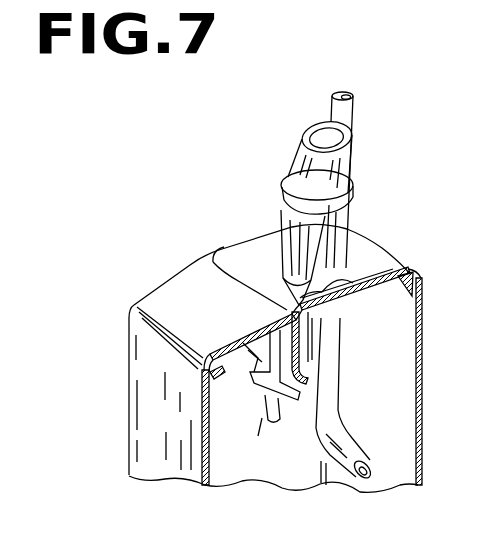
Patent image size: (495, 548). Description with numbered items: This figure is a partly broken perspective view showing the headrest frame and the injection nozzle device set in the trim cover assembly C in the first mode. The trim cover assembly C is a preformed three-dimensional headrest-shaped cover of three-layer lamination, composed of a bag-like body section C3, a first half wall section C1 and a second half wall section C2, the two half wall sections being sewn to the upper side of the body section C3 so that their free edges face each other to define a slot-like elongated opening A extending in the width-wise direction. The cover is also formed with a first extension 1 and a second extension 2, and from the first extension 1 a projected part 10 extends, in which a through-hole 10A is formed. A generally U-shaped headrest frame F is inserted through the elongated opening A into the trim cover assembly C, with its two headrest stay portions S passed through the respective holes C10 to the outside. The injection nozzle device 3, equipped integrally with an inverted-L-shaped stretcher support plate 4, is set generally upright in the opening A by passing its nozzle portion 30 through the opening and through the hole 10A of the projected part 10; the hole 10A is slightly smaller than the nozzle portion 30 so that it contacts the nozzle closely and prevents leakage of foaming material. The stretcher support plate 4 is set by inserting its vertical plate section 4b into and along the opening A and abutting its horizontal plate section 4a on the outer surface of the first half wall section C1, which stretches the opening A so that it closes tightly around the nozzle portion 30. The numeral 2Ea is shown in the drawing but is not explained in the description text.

The trim cover assembly C is at (278, 325).
The first half wall section C1 is at (382, 253).
The second half wall section C2 is at (182, 280).
The bag-like body section C3 is at (147, 388).
The holes C10 is at (348, 228).
The second extension 2 is at (278, 335).
The top wall edge portion 2Ea is at (227, 347).
The stretcher support plate 4 is at (262, 251).
The horizontal plate section 4a is at (350, 284).
The vertical plate section 4b is at (304, 372).
The first extension 1 is at (310, 342).
The injection nozzle device 3 is at (298, 160).
The headrest stay portions S is at (348, 116).
The headrest frame F is at (340, 407).
The projected part 10 is at (252, 370).
The through-hole 10A is at (293, 398).
The nozzle portion 30 is at (264, 417).
The elongated opening A is at (217, 257).